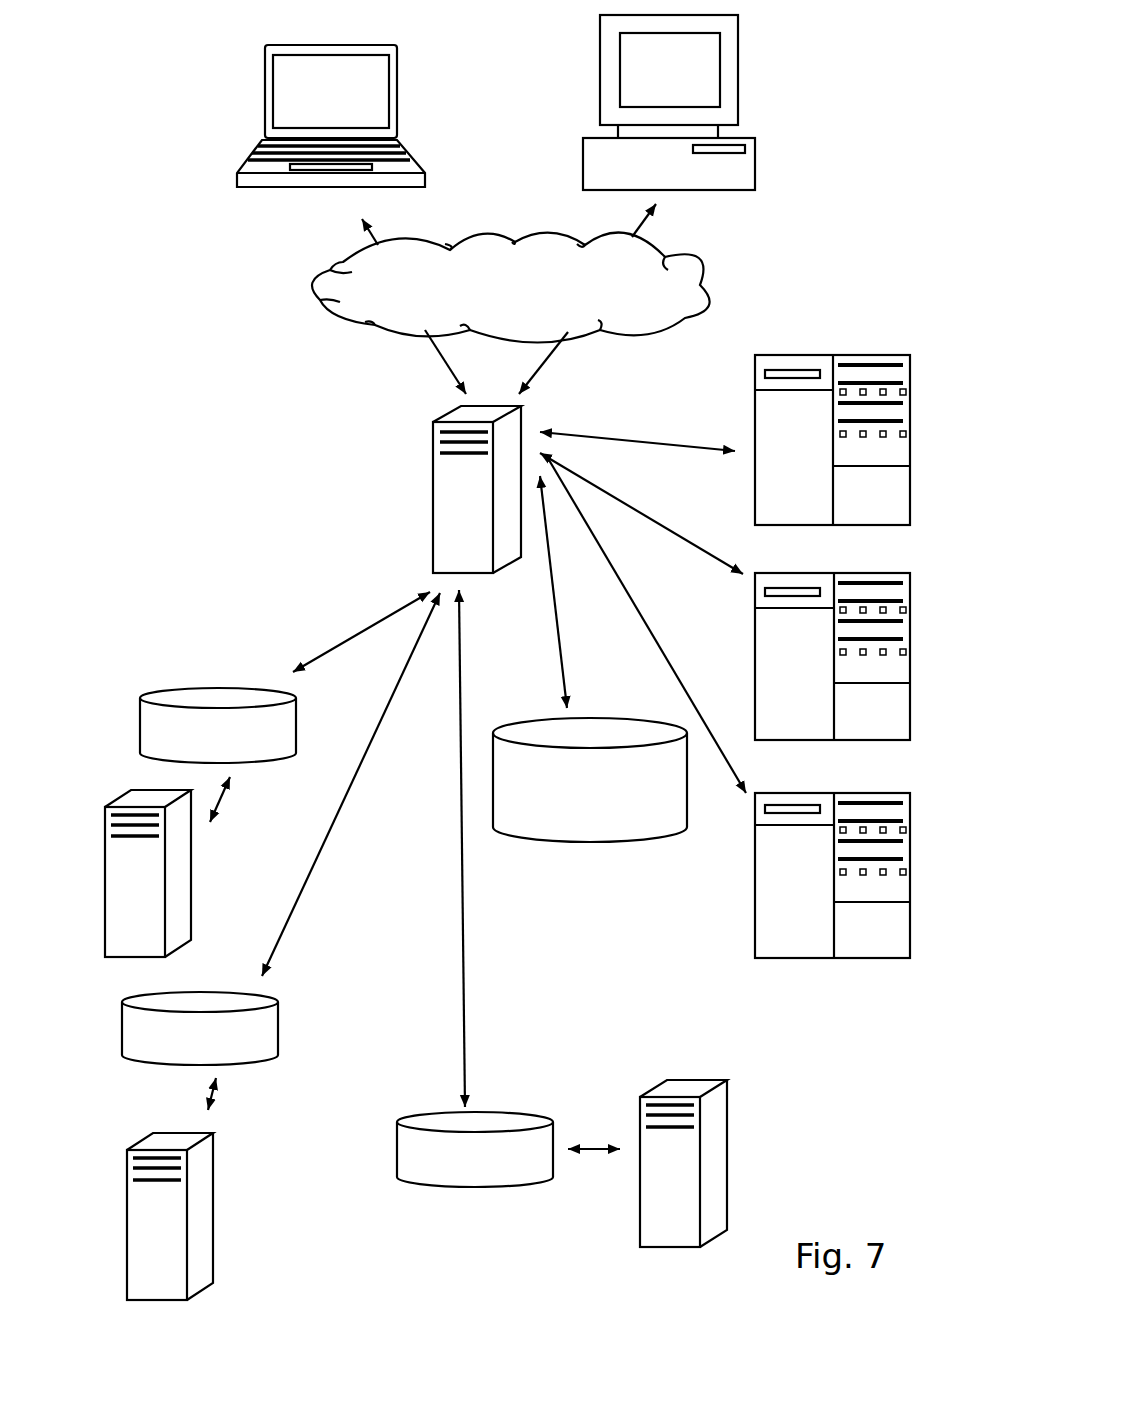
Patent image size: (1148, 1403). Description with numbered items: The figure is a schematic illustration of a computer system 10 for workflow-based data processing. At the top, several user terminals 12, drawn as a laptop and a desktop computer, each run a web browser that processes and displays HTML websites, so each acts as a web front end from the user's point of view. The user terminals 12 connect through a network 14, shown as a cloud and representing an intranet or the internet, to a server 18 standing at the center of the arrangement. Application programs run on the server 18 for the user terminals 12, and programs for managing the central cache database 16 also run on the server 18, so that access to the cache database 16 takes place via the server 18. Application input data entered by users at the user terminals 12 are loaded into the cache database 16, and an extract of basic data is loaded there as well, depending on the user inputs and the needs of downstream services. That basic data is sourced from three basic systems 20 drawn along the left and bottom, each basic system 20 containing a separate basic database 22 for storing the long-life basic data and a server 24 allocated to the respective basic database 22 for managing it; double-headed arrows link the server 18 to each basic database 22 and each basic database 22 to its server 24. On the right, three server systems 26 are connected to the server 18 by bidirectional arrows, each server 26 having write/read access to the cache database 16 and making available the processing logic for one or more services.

The computer system 10 is at (852, 29).
The user terminal 12 is at (277, 97).
The network 14 is at (672, 240).
The cache database 16 is at (576, 810).
The server 18 is at (447, 505).
The basic system 20 is at (123, 781).
The basic database 22 is at (208, 690).
The server 24 is at (170, 897).
The server system 26 is at (770, 402).